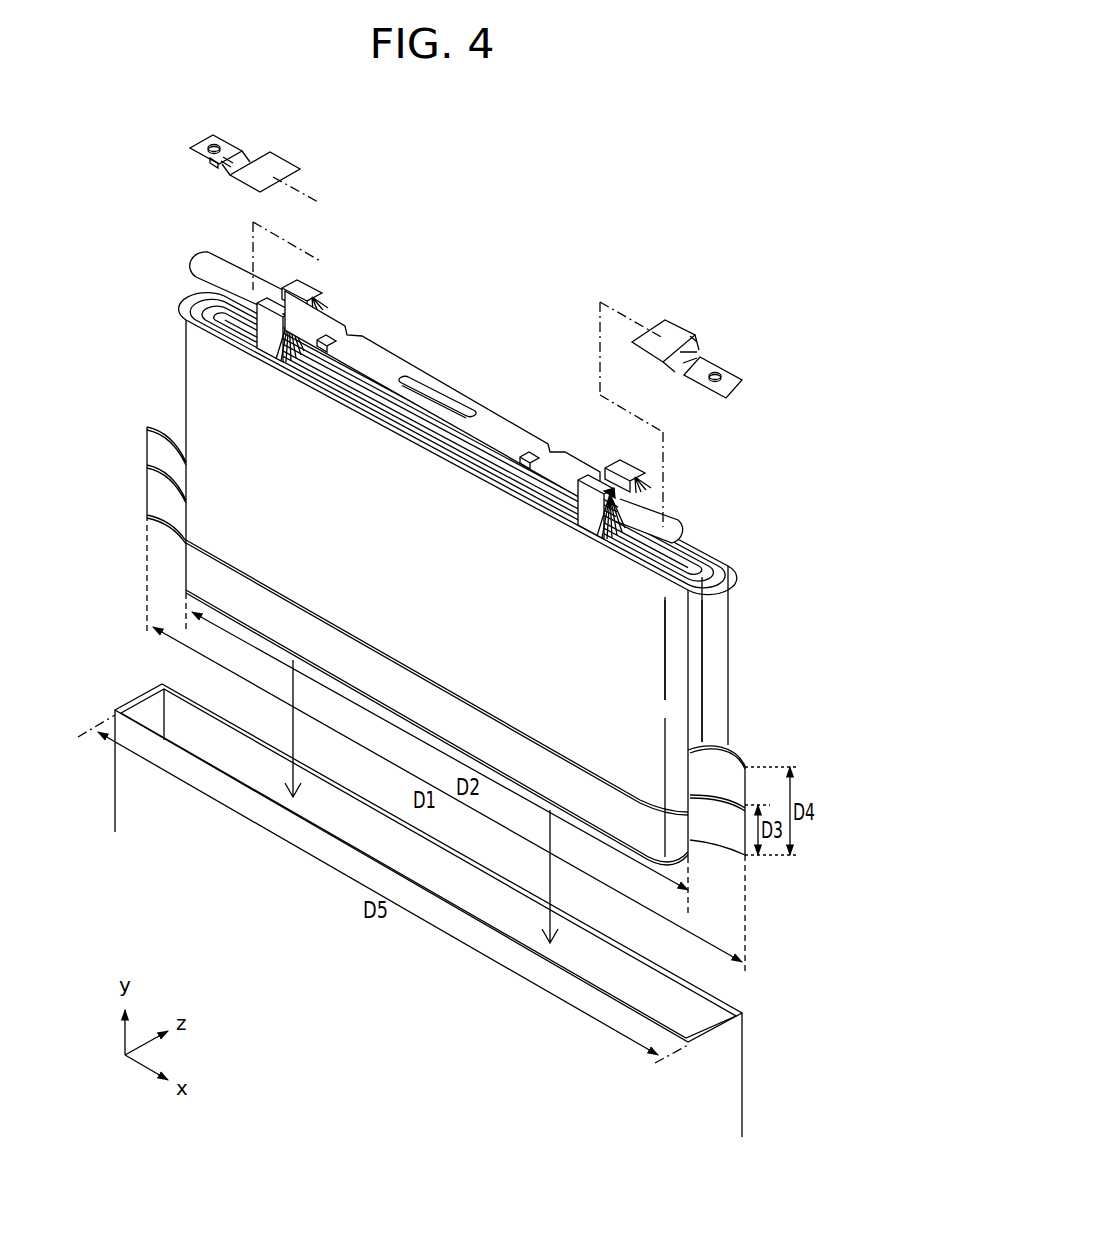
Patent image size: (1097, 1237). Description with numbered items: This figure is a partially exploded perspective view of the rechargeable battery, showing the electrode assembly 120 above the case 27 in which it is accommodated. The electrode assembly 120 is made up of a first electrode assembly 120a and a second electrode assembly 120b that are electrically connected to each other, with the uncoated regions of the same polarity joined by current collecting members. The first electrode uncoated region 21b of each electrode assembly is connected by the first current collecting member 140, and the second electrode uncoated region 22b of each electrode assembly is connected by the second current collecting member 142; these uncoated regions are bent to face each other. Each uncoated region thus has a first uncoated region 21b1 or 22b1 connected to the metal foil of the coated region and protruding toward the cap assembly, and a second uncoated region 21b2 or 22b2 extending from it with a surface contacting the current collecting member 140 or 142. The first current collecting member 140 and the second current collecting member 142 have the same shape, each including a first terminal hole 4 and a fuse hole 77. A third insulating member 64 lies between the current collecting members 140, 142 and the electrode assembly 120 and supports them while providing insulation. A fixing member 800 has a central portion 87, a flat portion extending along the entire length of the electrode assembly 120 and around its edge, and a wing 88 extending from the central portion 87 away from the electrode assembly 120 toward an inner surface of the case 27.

The second current collecting member 142 is at (198, 142).
The first current collecting member 140 is at (735, 377).
The first terminal hole 4 is at (218, 143).
The fuse hole 77 is at (212, 165).
The second electrode uncoated region 22b is at (268, 302).
The first uncoated region 22b1 is at (326, 305).
The second uncoated region 22b2 is at (307, 292).
The first electrode uncoated region 21b is at (639, 425).
The first uncoated region 21b1 is at (583, 520).
The second uncoated region 21b2 is at (593, 487).
The third insulating member 64 is at (400, 364).
The fixing member 800 is at (432, 641).
The central portion 87 is at (278, 622).
The wing 88 is at (100, 665).
The electrode assembly 120 is at (742, 671).
The first electrode assembly 120a is at (676, 684).
The second electrode assembly 120b is at (718, 640).
The case 27 is at (728, 1069).